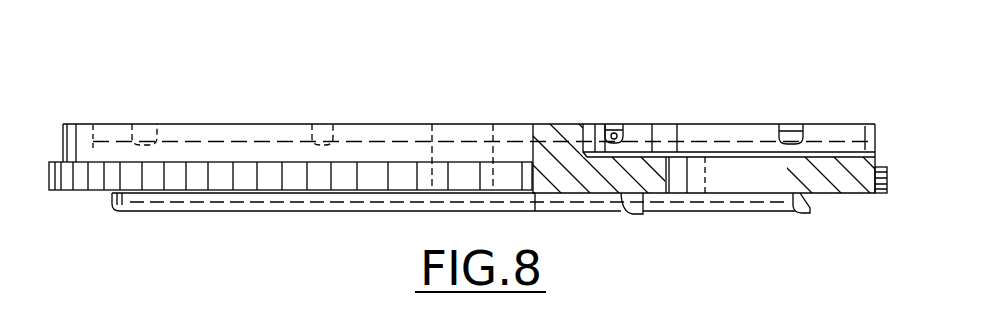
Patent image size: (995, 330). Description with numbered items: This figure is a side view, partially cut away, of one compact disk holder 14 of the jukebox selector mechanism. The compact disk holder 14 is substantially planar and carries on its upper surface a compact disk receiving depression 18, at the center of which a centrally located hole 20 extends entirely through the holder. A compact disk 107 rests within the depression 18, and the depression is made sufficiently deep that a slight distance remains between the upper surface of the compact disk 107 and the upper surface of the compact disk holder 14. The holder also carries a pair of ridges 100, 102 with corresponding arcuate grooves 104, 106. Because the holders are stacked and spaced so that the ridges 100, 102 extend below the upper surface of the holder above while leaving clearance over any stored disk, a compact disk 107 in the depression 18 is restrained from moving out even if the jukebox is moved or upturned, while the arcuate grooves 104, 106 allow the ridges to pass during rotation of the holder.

The compact disk holder 14 is at (350, 123).
The compact disk receiving depression 18 is at (845, 124).
The centrally located hole 20 is at (790, 177).
The ridge 100 is at (637, 214).
The ridge 102 is at (808, 213).
The arcuate groove 104 is at (612, 124).
The arcuate groove 106 is at (785, 124).
The compact disk 107 is at (818, 124).